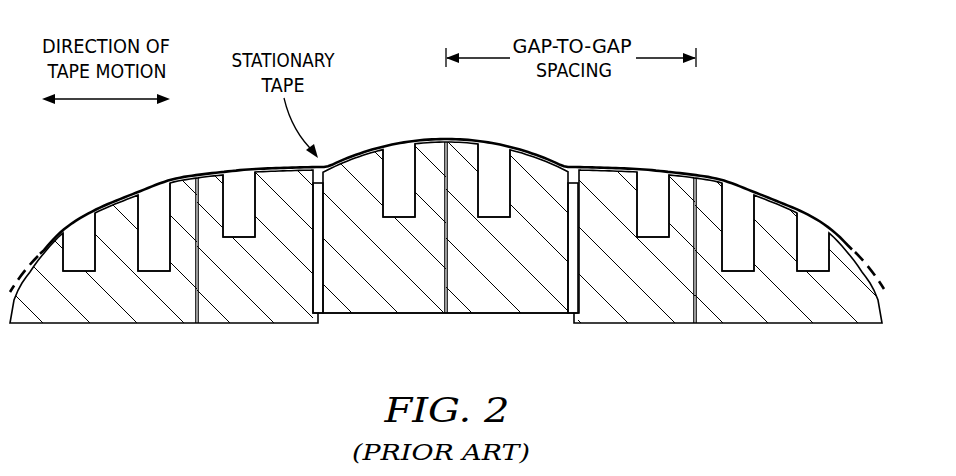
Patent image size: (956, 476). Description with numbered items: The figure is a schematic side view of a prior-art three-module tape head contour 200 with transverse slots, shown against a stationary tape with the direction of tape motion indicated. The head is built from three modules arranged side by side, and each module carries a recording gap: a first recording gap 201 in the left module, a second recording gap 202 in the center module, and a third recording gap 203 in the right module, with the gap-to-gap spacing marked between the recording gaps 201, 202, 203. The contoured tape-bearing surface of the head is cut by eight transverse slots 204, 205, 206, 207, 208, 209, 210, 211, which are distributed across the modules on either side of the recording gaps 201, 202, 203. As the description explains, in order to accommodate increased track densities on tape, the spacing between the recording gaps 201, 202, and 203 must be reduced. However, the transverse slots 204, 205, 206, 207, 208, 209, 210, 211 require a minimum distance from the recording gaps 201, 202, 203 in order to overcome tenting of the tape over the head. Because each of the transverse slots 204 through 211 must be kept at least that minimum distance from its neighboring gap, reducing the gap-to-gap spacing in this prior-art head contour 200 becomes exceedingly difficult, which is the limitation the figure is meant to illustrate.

The prior art multi-module tape head 200 is at (789, 63).
The recording gap 201 is at (164, 249).
The recording gap 202 is at (445, 232).
The recording gap 203 is at (728, 249).
The transverse slot 204 is at (80, 227).
The transverse slot 205 is at (155, 195).
The transverse slot 206 is at (240, 177).
The transverse slot 207 is at (398, 152).
The transverse slot 208 is at (493, 152).
The transverse slot 209 is at (652, 177).
The transverse slot 210 is at (737, 195).
The transverse slot 211 is at (812, 227).